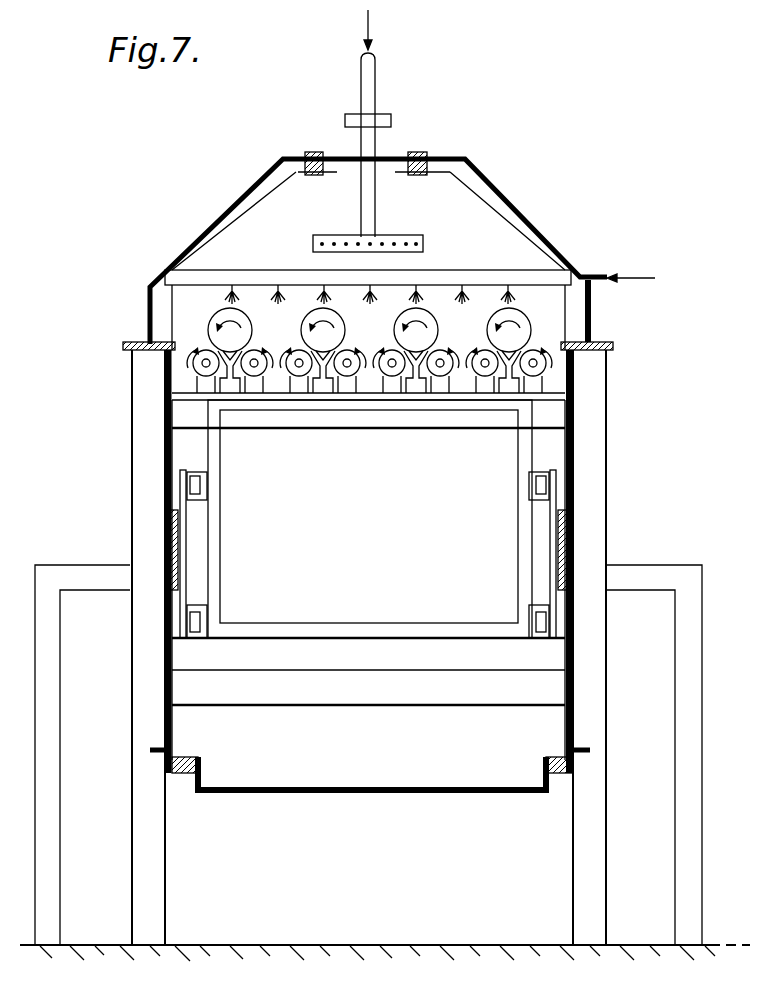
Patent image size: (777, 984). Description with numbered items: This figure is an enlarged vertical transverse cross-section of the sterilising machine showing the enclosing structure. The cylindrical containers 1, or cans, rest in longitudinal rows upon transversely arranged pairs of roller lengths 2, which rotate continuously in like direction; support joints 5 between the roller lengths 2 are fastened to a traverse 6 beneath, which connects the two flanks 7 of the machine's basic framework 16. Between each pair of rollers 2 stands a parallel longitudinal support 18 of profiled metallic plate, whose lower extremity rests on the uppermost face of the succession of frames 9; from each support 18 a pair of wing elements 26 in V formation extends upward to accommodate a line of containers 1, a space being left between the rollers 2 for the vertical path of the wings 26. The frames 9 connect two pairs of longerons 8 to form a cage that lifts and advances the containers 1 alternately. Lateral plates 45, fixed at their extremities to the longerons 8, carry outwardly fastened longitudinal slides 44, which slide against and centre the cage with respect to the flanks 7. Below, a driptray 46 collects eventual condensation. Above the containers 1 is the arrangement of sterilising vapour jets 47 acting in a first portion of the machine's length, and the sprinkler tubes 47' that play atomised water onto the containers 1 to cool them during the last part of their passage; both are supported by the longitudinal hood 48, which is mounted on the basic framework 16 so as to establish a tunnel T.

The cylindrical containers 1 is at (571, 206).
The roller lengths 2 is at (280, 372).
The support joints 5 is at (347, 392).
The traverse 6 is at (444, 420).
The flanks 7 is at (172, 437).
The longerons 8 is at (192, 503).
The frames 9 is at (330, 630).
The basic framework 16 is at (157, 877).
The longitudinal supports 18 is at (320, 398).
The wing elements 26 is at (240, 346).
The longitudinal slides 44 is at (170, 548).
The lateral plates 45 is at (183, 510).
The driptray 46 is at (368, 798).
The sterilising vapour jets 47 is at (358, 131).
The sprinkler tubes 47' is at (368, 234).
The longitudinal hood 48 is at (226, 212).
The tunnel T is at (459, 212).